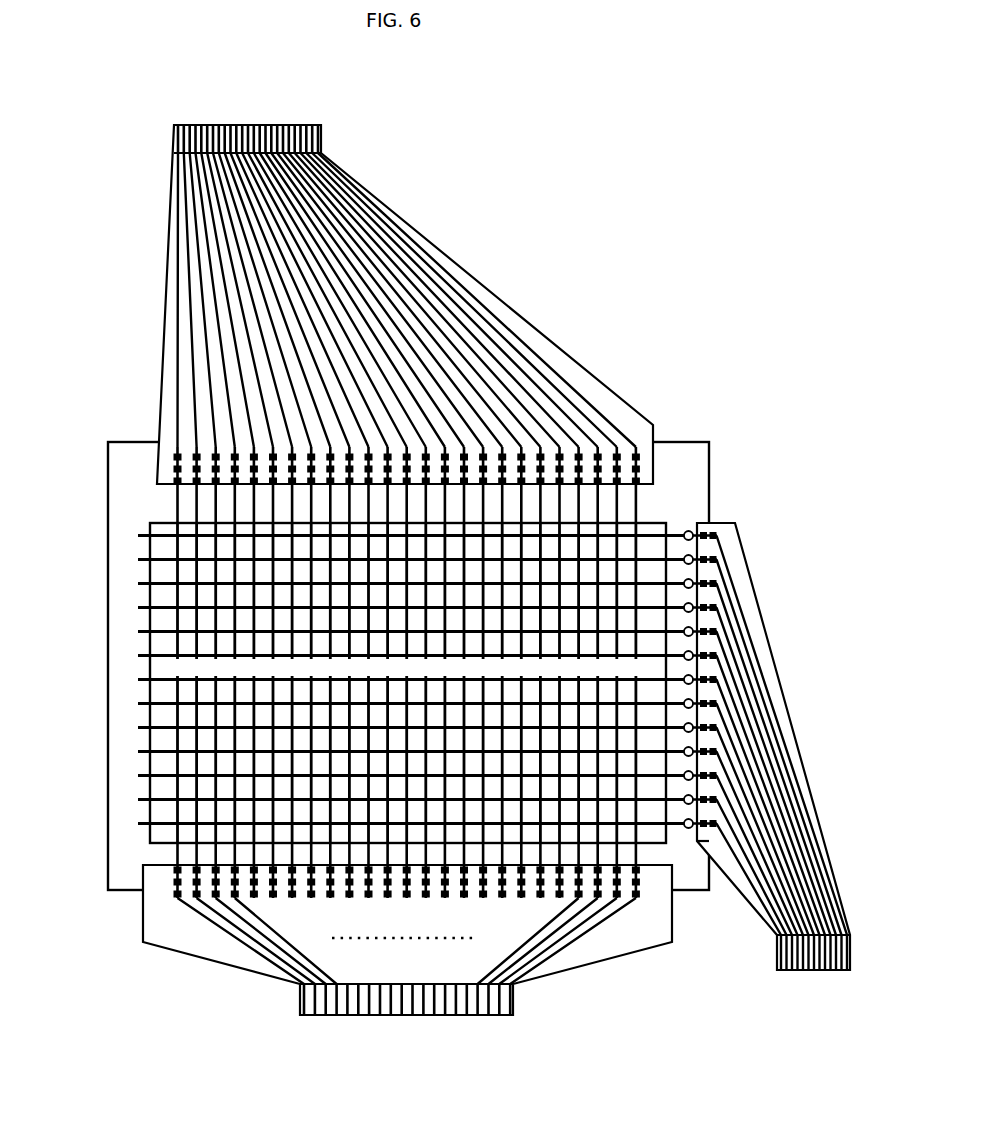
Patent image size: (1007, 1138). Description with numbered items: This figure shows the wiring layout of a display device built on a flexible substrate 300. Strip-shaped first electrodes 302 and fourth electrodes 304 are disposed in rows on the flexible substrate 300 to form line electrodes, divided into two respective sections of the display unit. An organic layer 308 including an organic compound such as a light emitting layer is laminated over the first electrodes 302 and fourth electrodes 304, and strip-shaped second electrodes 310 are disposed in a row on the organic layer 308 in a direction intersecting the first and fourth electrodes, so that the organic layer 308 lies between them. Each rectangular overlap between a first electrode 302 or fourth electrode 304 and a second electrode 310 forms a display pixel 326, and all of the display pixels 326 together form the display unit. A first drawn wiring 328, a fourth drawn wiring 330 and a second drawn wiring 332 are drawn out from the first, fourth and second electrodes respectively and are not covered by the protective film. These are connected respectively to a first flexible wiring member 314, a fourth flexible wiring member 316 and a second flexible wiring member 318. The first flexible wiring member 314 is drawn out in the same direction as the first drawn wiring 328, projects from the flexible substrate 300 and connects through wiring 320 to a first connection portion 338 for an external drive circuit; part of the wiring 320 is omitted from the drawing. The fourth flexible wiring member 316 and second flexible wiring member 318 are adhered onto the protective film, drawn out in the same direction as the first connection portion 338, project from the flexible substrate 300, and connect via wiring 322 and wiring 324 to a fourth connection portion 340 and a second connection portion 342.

The flexible substrate 300 is at (127, 492).
The first electrodes 302 is at (173, 763).
The fourth electrodes 304 is at (447, 608).
The organic layer 308 is at (158, 594).
The second electrodes 310 is at (620, 560).
The first flexible wiring member 314 is at (163, 937).
The fourth flexible wiring member 316 is at (170, 323).
The second flexible wiring member 318 is at (840, 885).
The wiring 320 is at (600, 927).
The wiring 322 is at (415, 243).
The wiring 324 is at (768, 728).
The display pixel 326 is at (173, 535).
The first drawn wiring 328 is at (175, 843).
The fourth drawn wiring 330 is at (603, 495).
The second drawn wiring 332 is at (700, 550).
The first connection portion 338 is at (353, 1016).
The fourth connection portion 340 is at (183, 131).
The second connection portion 342 is at (817, 968).